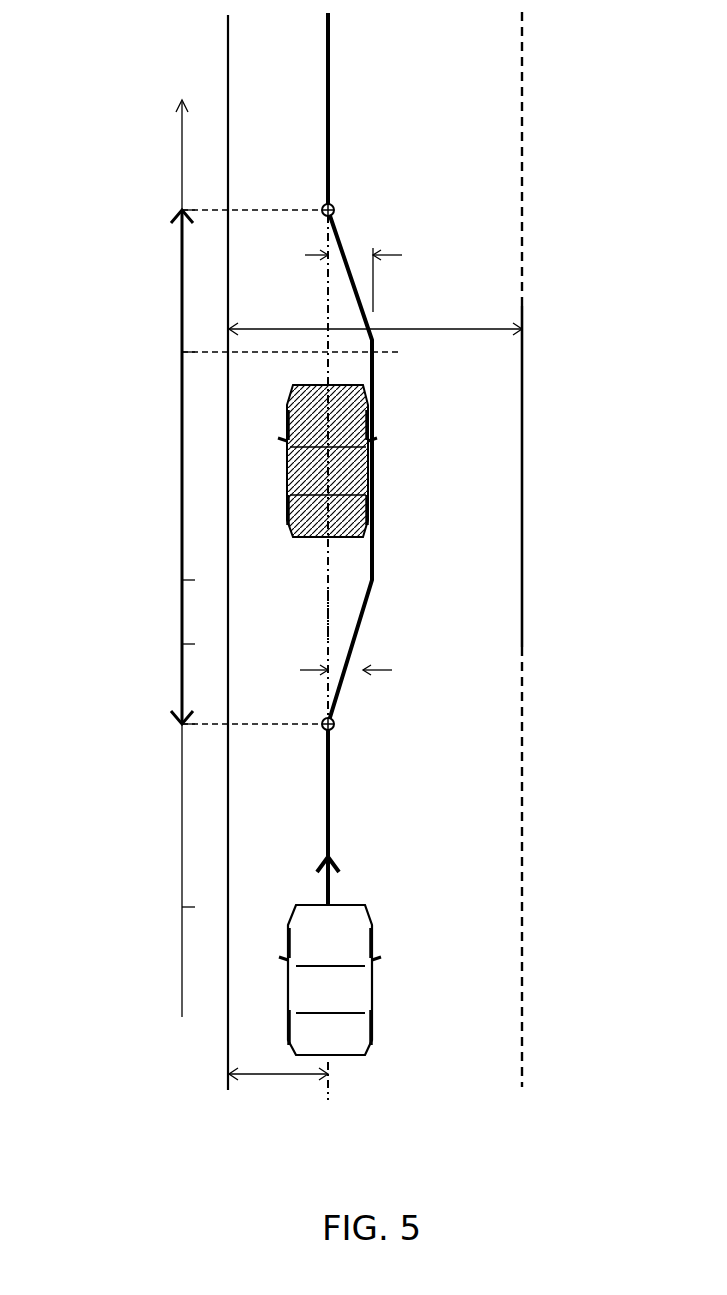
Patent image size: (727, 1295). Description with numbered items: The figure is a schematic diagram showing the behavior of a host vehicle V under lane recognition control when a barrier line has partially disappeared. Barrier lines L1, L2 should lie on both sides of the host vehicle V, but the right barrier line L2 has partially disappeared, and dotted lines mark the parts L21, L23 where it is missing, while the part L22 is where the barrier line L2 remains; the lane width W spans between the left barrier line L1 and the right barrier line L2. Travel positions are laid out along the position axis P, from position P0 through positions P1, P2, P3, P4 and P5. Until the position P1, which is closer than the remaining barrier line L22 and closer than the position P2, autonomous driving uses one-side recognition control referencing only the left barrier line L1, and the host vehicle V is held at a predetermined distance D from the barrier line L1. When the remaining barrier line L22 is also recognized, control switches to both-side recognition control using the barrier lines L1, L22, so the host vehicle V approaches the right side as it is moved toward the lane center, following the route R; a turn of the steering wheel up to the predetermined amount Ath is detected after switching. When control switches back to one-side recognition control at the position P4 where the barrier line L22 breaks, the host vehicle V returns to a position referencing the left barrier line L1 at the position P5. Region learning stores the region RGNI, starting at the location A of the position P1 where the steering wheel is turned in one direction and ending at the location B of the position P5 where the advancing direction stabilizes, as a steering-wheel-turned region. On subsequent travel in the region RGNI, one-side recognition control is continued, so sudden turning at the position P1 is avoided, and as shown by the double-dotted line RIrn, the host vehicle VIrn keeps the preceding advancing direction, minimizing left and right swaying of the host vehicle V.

The left barrier line L1 is at (228, 45).
The right barrier line L2 is at (524, 487).
The disappeared part of barrier line L21 is at (524, 873).
The remaining barrier line L22 is at (524, 563).
The disappeared part of barrier line L23 is at (524, 163).
The position P is at (120, 551).
The position P0 is at (168, 907).
The position P1 is at (231, 724).
The position P2 is at (168, 644).
The position P3 is at (168, 580).
The position P4 is at (269, 352).
The position P5 is at (231, 210).
The steering-wheel-turned region RGNI is at (181, 464).
The travel route R is at (361, 636).
The location A is at (335, 728).
The location B is at (335, 206).
The lane width W is at (375, 316).
The predetermined amount Ath is at (357, 472).
The double-dotted line RIrn is at (328, 610).
The host vehicle VIrn is at (375, 461).
The host vehicle V is at (375, 968).
The predetermined distance D is at (278, 1084).